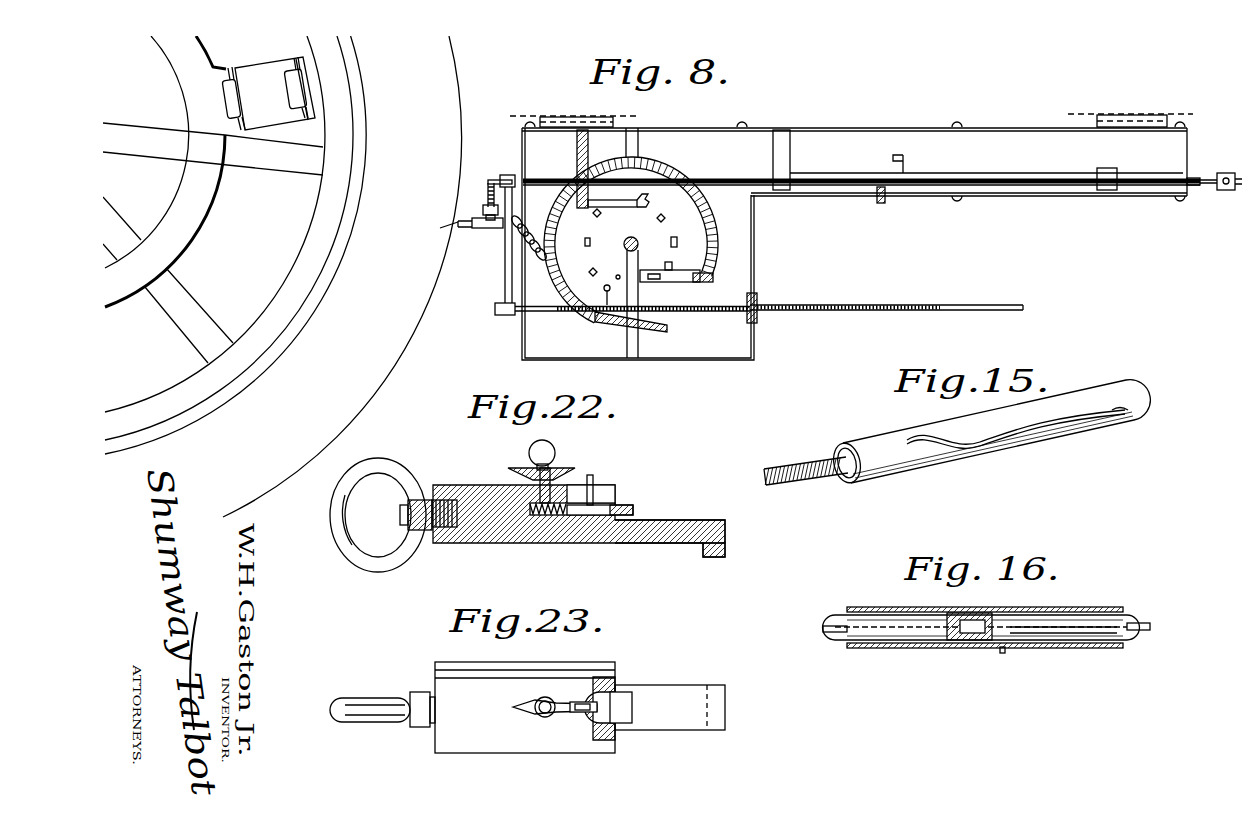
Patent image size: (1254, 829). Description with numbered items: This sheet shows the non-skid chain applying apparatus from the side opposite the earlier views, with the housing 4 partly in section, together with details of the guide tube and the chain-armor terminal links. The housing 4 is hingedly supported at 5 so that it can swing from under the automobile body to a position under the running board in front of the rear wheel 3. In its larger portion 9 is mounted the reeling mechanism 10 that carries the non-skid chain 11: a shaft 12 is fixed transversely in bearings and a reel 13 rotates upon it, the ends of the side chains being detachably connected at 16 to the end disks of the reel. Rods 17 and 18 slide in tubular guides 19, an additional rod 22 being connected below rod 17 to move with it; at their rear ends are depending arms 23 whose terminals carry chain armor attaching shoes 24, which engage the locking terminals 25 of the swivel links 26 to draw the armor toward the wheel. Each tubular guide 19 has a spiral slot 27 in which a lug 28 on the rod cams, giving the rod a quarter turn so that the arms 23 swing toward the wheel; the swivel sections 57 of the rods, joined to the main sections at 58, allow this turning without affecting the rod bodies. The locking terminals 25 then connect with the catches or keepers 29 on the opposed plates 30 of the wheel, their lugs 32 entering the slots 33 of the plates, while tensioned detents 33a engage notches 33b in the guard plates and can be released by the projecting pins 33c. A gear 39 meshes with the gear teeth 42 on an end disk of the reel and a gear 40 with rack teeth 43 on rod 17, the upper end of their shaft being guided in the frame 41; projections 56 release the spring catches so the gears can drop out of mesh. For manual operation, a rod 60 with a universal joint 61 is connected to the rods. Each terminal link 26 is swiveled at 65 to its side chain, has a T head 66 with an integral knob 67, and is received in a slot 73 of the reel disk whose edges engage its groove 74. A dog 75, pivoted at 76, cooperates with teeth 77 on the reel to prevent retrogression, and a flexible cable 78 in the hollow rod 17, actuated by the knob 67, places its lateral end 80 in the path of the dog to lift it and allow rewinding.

In FIG. 8, the rear wheel 3 is at (452, 82).
In FIG. 8, the housing 4 is at (878, 127).
In FIG. 8, the hinge support 5 is at (546, 117).
In FIG. 8, the larger portion of the housing 9 is at (754, 340).
In FIG. 8, the reeling mechanism 10 is at (556, 318).
In FIG. 8, the non-skid chain 11 is at (530, 252).
In FIG. 8, the shaft 12 is at (638, 244).
In FIG. 8, the reel 13 is at (753, 218).
In FIG. 8, the connection of side chain ends 16 is at (662, 276).
In FIG. 8, the rod 17 is at (707, 172).
In FIG. 15, the rod 17 is at (818, 480).
In FIG. 16, the rod 17 is at (890, 613).
In FIG. 8, the rod 18 is at (697, 182).
In FIG. 8, the tubular guide 19 is at (961, 172).
In FIG. 15, the tubular guide 19 is at (884, 440).
In FIG. 16, the tubular guide 19 is at (892, 648).
In FIG. 8, the additional rod 22 is at (838, 304).
In FIG. 8, the depending arm 23 is at (488, 181).
In FIG. 8, the chain armor attaching shoe 24 is at (475, 229).
In FIG. 8, the locking terminal 25 is at (676, 290).
In FIG. 22, the locking terminal 25 is at (677, 520).
In FIG. 23, the locking terminal 25 is at (670, 730).
In FIG. 8, the swivel link 26 is at (698, 300).
In FIG. 22, the swivel link 26 is at (503, 543).
In FIG. 23, the swivel link 26 is at (492, 753).
In FIG. 15, the spiral slot 27 is at (1020, 445).
In FIG. 16, the spiral slot 27 is at (1046, 648).
In FIG. 15, the lug 28 is at (1118, 420).
In FIG. 16, the lug 28 is at (1002, 653).
In FIG. 8, the catch or keeper 29 is at (225, 92).
In FIG. 8, the plate 30 is at (258, 67).
In FIG. 8, the lug 32 is at (450, 228).
In FIG. 22, the lug 32 is at (725, 548).
In FIG. 23, the lug 32 is at (727, 710).
In FIG. 8, the slot or groove 33 is at (292, 130).
In FIG. 22, the detent 33a is at (630, 505).
In FIG. 23, the detent 33a is at (620, 723).
In FIG. 8, the notch 33b is at (226, 103).
In FIG. 22, the projecting pin 33c is at (593, 475).
In FIG. 23, the projecting pin 33c is at (588, 712).
In FIG. 8, the gear 39 is at (605, 326).
In FIG. 8, the gear 40 is at (607, 283).
In FIG. 8, the frame 41 is at (640, 130).
In FIG. 8, the gear teeth 42 is at (700, 222).
In FIG. 15, the rack teeth 43 is at (808, 465).
In FIG. 8, the projection 56 is at (903, 157).
In FIG. 16, the swivel section 57 is at (1073, 615).
In FIG. 16, the swivel connection 58 is at (965, 648).
In FIG. 8, the rod 60 is at (1194, 186).
In FIG. 8, the universal joint 61 is at (1226, 173).
In FIG. 22, the swivel 65 is at (420, 540).
In FIG. 23, the swivel 65 is at (418, 727).
In FIG. 22, the T head 66 is at (520, 472).
In FIG. 23, the T head 66 is at (525, 714).
In FIG. 22, the knob 67 is at (552, 448).
In FIG. 23, the knob 67 is at (548, 697).
In FIG. 8, the slot 73 is at (710, 283).
In FIG. 23, the groove 74 is at (585, 677).
In FIG. 8, the dog 75 is at (610, 198).
In FIG. 8, the pivot 76 is at (577, 205).
In FIG. 8, the teeth 77 is at (587, 246).
In FIG. 8, the flexible cable 78 is at (837, 186).
In FIG. 8, the lateral end of cable 80 is at (881, 204).